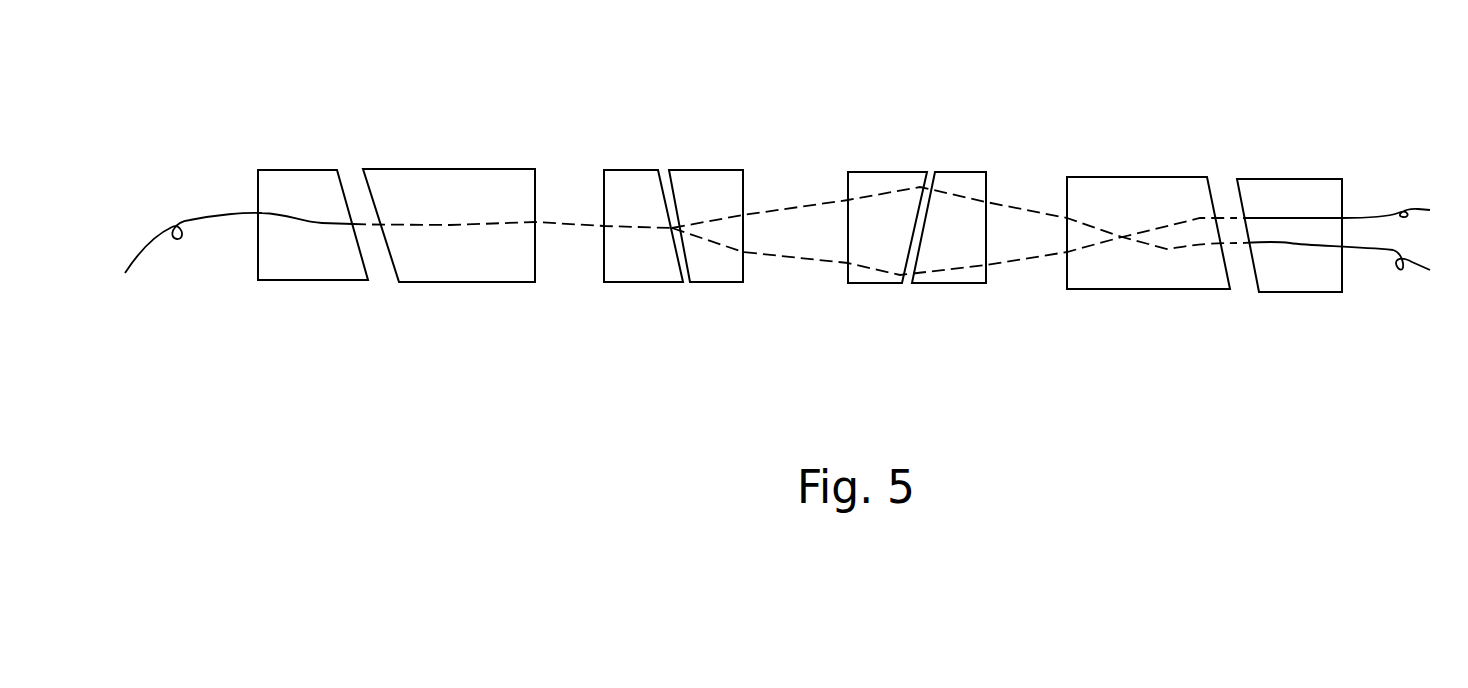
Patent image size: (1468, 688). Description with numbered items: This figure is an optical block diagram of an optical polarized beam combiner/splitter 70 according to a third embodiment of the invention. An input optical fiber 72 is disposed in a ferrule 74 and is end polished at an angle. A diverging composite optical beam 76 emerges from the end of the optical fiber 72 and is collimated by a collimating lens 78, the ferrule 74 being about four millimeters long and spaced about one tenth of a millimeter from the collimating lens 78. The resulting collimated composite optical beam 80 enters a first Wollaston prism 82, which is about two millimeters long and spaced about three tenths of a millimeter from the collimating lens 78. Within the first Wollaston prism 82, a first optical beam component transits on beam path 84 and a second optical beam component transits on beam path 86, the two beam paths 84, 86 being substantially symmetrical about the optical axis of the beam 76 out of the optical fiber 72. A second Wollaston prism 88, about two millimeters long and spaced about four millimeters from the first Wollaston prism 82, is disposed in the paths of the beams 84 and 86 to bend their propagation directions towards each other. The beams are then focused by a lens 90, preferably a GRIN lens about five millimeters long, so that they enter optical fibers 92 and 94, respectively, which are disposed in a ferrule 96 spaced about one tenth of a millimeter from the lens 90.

The optical polarized beam combiner/splitter 70 is at (814, 82).
The optical fiber 72 is at (217, 215).
The ferrule 74 is at (290, 282).
The diverging composite optical beam 76 is at (357, 225).
The collimating lens 78 is at (435, 169).
The collimated composite optical beam 80 is at (563, 220).
The first Wollaston prism 82 is at (635, 282).
The beam path 84 is at (710, 227).
The beam path 86 is at (716, 230).
The second Wollaston prism 88 is at (885, 283).
The lens 90 is at (1142, 289).
The optical fiber 92 is at (1418, 210).
The optical fiber 94 is at (1420, 267).
The ferrule 96 is at (1297, 175).